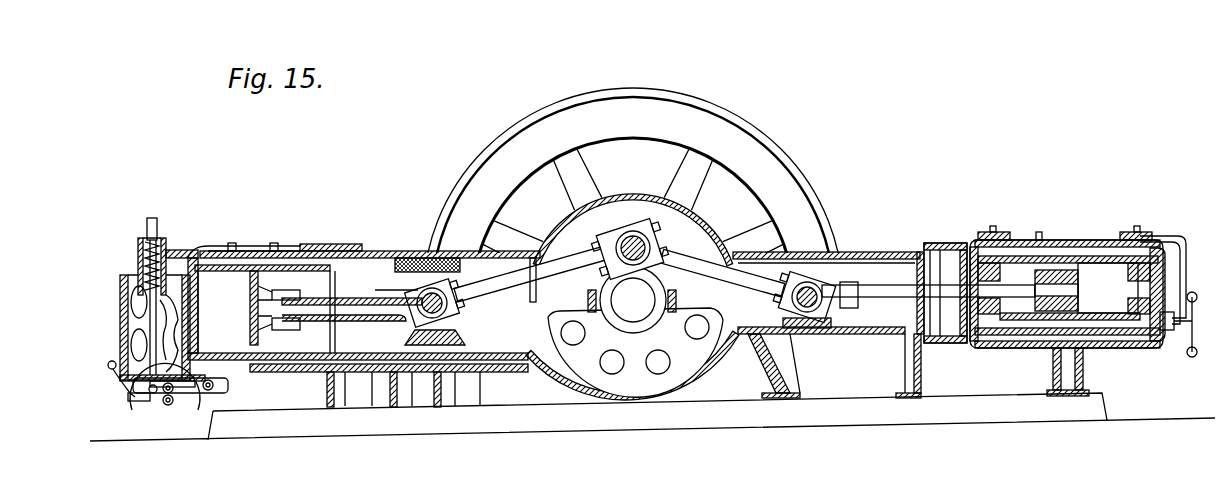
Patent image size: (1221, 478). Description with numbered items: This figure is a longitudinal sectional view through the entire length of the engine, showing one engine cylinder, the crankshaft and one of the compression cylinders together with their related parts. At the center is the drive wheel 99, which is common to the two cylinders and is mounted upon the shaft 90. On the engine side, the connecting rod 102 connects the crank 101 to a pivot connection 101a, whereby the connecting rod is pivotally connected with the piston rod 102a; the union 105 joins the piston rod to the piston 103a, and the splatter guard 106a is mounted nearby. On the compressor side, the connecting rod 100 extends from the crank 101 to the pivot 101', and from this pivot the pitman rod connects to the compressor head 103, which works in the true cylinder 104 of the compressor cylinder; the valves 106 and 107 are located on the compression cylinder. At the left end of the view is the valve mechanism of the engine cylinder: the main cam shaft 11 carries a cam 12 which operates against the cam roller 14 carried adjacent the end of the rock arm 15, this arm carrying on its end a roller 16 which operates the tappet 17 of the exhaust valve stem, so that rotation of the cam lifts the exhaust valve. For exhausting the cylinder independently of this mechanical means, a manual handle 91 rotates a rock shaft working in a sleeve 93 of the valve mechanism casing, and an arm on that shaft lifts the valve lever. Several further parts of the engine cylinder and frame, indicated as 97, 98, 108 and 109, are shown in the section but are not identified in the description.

The main cam shaft 11 is at (172, 394).
The cam 12 is at (165, 406).
The cam roller 14 is at (192, 360).
The rock arm 15 is at (200, 393).
The roller 16 is at (150, 394).
The tappet 17 is at (126, 358).
The shaft 90 is at (618, 300).
The handle 91 is at (108, 375).
The sleeve 93 is at (140, 400).
The left cylinder 97 is at (204, 252).
The crankcase shell 98 is at (690, 236).
The drive wheel 99 is at (790, 168).
The connecting rod 100 is at (716, 276).
The crank 101 is at (630, 225).
The pivot connection 101a is at (437, 293).
The pivot 101' is at (828, 274).
The connecting rod 102 is at (534, 258).
The piston rod 102a is at (356, 258).
The compressor head 103 is at (1080, 285).
The piston 103a is at (265, 295).
The true cylinder of the compressor cylinder 104 is at (1113, 270).
The union 105 is at (288, 290).
The valve 106 is at (1002, 242).
The splatter guard 106a is at (398, 263).
The valve 107 is at (1158, 244).
The cylinder liner 108 is at (1049, 256).
The crosshead shoe 109 is at (428, 346).